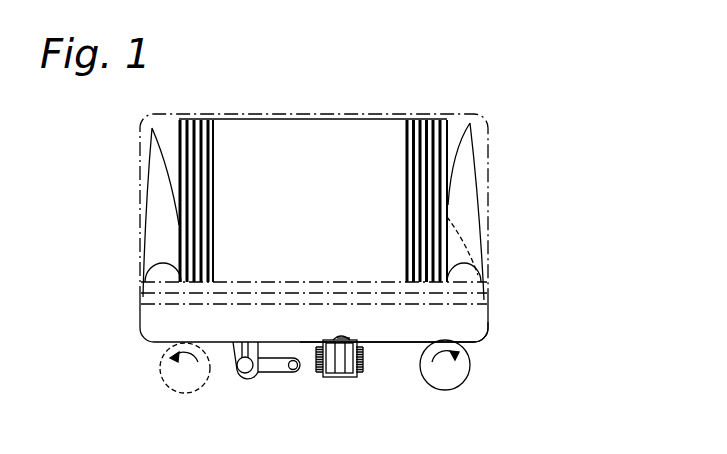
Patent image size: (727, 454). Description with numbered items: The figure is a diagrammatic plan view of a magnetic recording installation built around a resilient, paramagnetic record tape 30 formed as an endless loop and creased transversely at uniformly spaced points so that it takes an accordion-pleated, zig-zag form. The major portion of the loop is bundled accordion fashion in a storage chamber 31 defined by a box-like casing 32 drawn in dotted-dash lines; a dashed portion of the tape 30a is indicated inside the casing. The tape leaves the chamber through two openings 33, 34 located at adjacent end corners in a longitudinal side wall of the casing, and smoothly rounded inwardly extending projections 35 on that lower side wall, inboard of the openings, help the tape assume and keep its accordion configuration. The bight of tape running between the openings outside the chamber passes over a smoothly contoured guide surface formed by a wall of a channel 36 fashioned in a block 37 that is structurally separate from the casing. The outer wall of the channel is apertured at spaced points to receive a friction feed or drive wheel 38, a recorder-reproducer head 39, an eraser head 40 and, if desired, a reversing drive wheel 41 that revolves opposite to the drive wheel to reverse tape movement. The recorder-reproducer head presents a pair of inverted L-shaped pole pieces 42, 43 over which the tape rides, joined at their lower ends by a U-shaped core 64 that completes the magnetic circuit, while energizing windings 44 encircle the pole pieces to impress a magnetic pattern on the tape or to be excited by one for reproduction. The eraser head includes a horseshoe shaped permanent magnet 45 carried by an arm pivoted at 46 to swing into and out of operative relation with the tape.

The record tape 30 is at (477, 173).
The flap hidden portion 30a is at (453, 218).
The storage chamber 31 is at (350, 126).
The casing 32 is at (418, 118).
The opening 33 is at (138, 296).
The opening 34 is at (488, 294).
The projections 35 is at (157, 264).
The channel 36 is at (483, 333).
The block 37 is at (484, 322).
The friction feed or drive wheel 38 is at (470, 376).
The recorder-reproducer head 39 is at (372, 378).
The eraser head 40 is at (250, 390).
The reversing drive wheel 41 is at (166, 376).
The pole piece 42 is at (337, 338).
The pole piece 43 is at (347, 338).
The energizing windings 44 is at (363, 356).
The horseshoe shaped permanent magnet 45 is at (237, 366).
The pivot 46 is at (293, 372).
The U-shaped core 64 is at (345, 376).